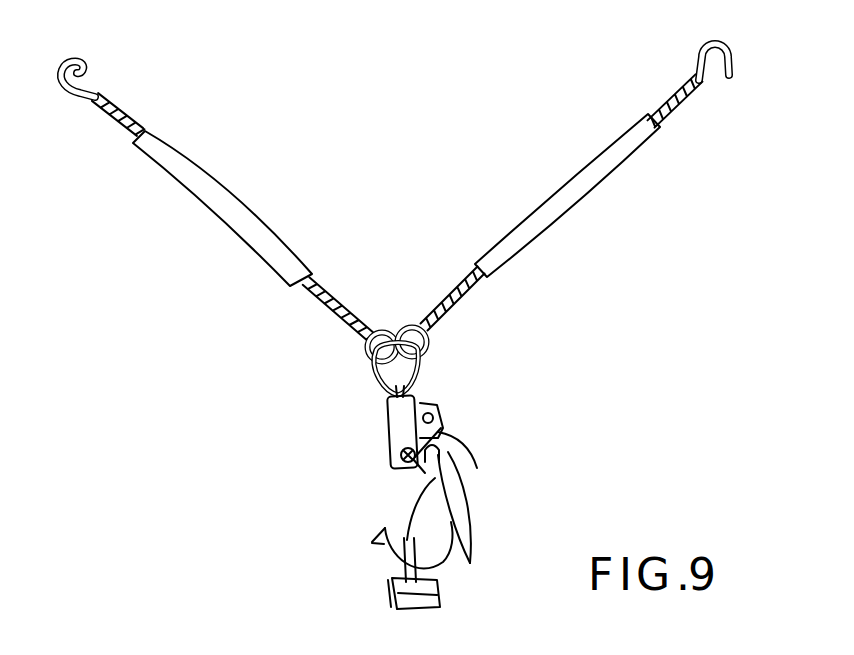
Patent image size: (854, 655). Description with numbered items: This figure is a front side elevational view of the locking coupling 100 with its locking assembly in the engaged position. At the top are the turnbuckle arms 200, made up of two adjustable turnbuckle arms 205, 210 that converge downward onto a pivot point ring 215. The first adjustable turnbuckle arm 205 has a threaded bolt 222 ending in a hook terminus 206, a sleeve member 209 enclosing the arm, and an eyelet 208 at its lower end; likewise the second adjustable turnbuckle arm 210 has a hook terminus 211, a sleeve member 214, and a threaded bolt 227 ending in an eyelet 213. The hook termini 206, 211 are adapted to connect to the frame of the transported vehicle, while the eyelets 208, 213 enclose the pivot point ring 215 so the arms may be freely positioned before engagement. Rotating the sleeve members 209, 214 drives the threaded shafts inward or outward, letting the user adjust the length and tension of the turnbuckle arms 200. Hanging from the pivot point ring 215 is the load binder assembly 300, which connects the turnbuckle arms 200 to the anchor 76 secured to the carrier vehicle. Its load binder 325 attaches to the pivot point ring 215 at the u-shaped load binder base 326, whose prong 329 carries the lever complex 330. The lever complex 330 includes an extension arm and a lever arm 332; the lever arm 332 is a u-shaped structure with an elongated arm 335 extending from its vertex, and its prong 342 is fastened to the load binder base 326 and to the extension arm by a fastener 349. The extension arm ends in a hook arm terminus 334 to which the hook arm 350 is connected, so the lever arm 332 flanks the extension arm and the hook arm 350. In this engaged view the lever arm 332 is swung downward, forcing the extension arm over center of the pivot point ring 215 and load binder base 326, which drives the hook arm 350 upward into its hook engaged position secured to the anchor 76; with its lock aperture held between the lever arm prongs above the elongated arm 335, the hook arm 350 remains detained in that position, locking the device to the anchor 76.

The locking coupling 100 is at (623, 316).
The turnbuckle arms 200 is at (161, 251).
The hook terminus 206 is at (82, 63).
The threaded bolt 222 is at (96, 98).
The adjustable turnbuckle arm 205 is at (165, 145).
The sleeve member 209 is at (273, 253).
The eyelet 208 is at (368, 360).
The eyelet 213 is at (420, 324).
The pivot point ring 215 is at (422, 366).
The hook terminus 211 is at (731, 63).
The adjustable turnbuckle arm 210 is at (640, 140).
The sleeve member 214 is at (605, 167).
The threaded bolt 227 is at (462, 297).
The load binder assembly 300 is at (560, 464).
The load binder base 326 is at (395, 418).
The prong 329 is at (443, 440).
The hook arm terminus 334 is at (436, 416).
The load binder 325 is at (498, 425).
The lever complex 330 is at (477, 468).
The elongated arm 335 is at (464, 502).
The lever arm 332 is at (462, 520).
The fastener 349 is at (400, 455).
The prong 342 is at (425, 473).
The hook arm 350 is at (383, 543).
The anchor 76 is at (427, 590).